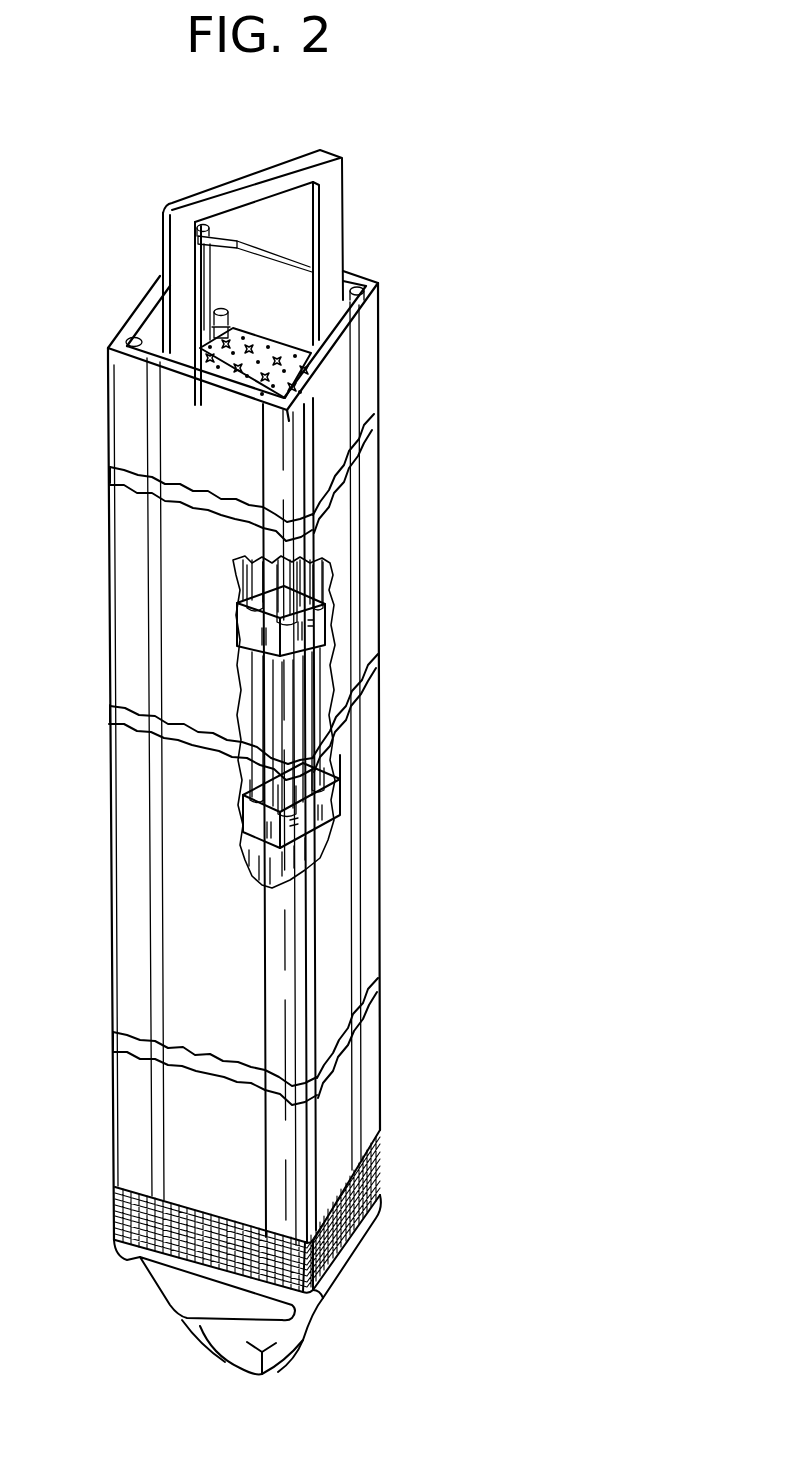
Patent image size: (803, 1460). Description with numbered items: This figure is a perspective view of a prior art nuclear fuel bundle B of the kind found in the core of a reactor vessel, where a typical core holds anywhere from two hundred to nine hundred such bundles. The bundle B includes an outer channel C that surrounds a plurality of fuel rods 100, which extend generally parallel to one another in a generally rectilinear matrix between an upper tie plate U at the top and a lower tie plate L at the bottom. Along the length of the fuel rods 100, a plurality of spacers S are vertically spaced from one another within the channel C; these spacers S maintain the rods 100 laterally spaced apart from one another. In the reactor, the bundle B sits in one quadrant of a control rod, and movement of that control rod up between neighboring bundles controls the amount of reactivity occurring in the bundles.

The fuel bundle B is at (383, 890).
The upper tie plate U is at (246, 339).
The outer channel C is at (110, 502).
The fuel rods 100 is at (327, 668).
The spacers S is at (320, 608).
The lower tie plate L is at (352, 1257).